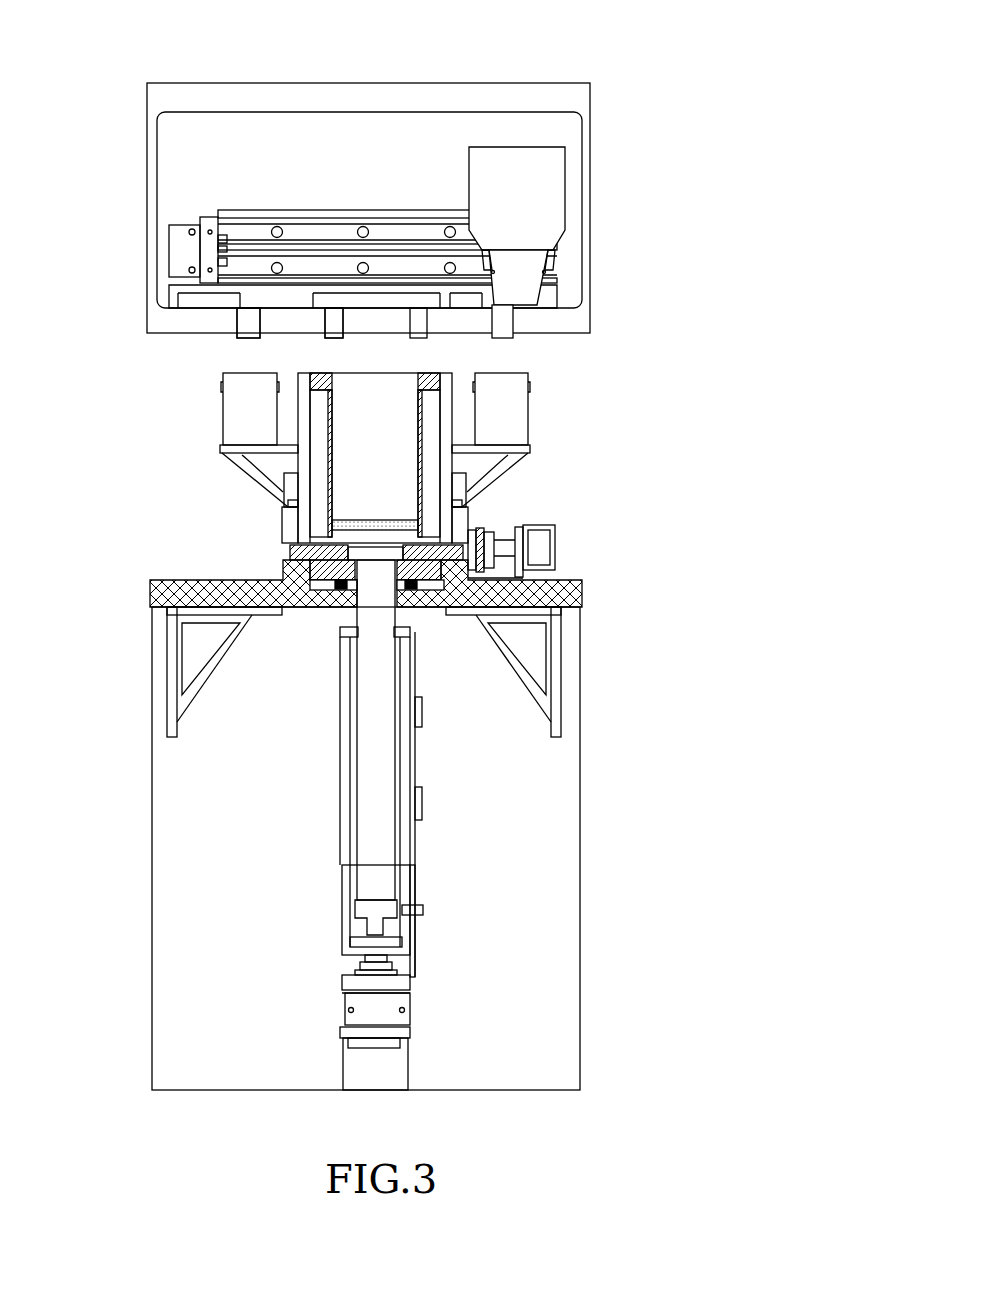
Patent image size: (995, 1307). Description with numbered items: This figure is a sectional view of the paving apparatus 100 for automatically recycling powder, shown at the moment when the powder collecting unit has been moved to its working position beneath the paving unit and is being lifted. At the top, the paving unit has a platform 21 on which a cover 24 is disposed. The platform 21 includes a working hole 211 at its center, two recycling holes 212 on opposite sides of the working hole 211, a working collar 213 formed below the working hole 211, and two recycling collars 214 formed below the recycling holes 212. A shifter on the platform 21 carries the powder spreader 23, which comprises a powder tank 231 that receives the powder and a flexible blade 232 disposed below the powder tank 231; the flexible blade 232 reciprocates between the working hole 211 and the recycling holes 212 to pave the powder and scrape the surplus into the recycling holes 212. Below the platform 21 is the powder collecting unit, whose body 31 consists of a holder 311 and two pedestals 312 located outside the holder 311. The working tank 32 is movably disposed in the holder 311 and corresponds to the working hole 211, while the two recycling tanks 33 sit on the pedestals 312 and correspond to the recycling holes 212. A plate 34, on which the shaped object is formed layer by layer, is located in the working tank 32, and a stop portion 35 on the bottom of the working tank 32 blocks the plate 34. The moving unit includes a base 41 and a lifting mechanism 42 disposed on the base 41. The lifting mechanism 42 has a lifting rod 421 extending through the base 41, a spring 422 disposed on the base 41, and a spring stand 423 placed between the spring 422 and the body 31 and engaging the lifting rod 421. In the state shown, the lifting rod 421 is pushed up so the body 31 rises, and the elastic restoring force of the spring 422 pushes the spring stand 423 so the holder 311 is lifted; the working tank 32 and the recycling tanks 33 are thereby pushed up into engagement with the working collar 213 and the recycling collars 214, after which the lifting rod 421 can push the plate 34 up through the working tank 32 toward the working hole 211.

The filling apparatus 100 is at (112, 44).
The platform 21 is at (184, 332).
The cover 24 is at (548, 83).
The working hole 211 is at (333, 335).
The recycling holes 212 is at (245, 330).
The working collar 213 is at (328, 340).
The recycling collars 214 is at (238, 336).
The powder spreader 23 is at (680, 133).
The powder tank 231 is at (533, 147).
The flexible blade 232 is at (540, 303).
The working tank 32 is at (433, 373).
The recycling tanks 33 is at (530, 373).
The body 31 is at (663, 440).
The pedestals 312 is at (530, 450).
The holder 311 is at (450, 493).
The stop portion 35 is at (475, 528).
The plate 34 is at (290, 548).
The base 41 is at (582, 592).
The lifting mechanism 42 is at (418, 950).
The lifting rod 421 is at (395, 835).
The spring 422 is at (318, 596).
The spring stand 423 is at (428, 607).